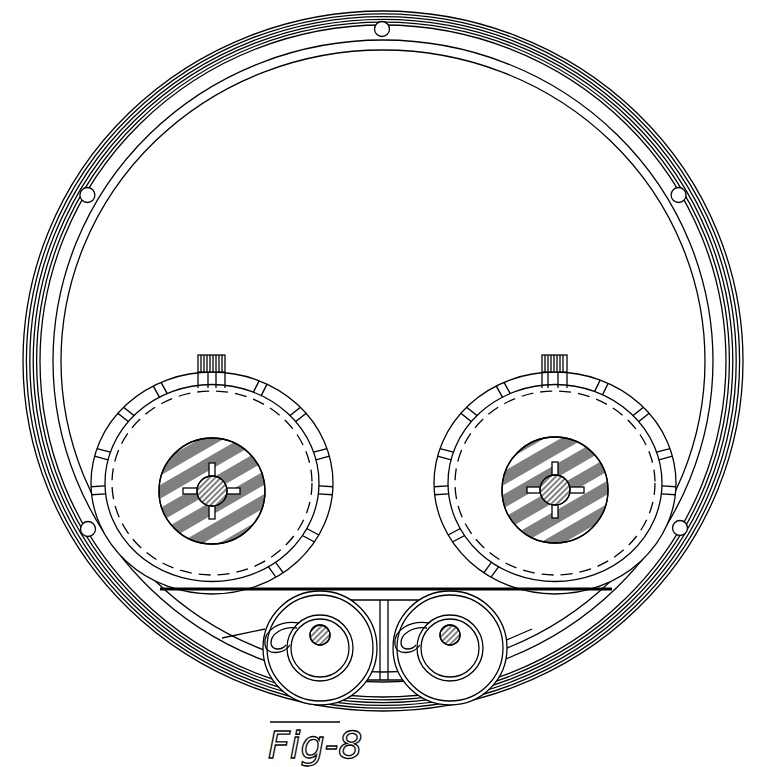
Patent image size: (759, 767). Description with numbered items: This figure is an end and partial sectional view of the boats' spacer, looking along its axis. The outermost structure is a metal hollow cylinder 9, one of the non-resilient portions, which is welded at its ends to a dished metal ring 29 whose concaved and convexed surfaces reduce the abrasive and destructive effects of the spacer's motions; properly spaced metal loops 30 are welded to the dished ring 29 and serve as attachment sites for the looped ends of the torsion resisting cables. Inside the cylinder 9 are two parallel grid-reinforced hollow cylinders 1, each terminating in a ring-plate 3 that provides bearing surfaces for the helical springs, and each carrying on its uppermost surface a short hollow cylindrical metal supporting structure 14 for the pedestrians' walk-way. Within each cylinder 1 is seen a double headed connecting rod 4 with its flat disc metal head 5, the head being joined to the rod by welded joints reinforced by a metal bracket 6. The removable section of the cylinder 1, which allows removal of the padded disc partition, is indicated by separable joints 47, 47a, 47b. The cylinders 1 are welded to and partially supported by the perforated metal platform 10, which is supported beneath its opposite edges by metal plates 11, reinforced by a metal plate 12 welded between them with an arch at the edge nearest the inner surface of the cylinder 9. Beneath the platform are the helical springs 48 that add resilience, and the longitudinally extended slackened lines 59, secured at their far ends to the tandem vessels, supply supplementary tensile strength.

The dished metal ring 29 is at (632, 112).
The metal hollow cylinder 9 is at (598, 123).
The metal loop 30 is at (686, 193).
The hollow cylinder 1 is at (234, 474).
The separable joint 47 is at (260, 383).
The separable joint 47a is at (93, 485).
The separable joint 47b is at (325, 488).
The double headed connecting rod 4 is at (232, 486).
The flat disc metal head 5 is at (263, 510).
The ring-plate 3 is at (545, 467).
The short hollow cylindrical metal supporting structure 14 is at (568, 360).
The metal bracket 6 is at (558, 470).
The perforated metal platform 10 is at (358, 588).
The metal plate 11 is at (530, 602).
The metal plate 12 is at (383, 607).
The slackened line 59 is at (460, 640).
The helical spring 48 is at (533, 648).